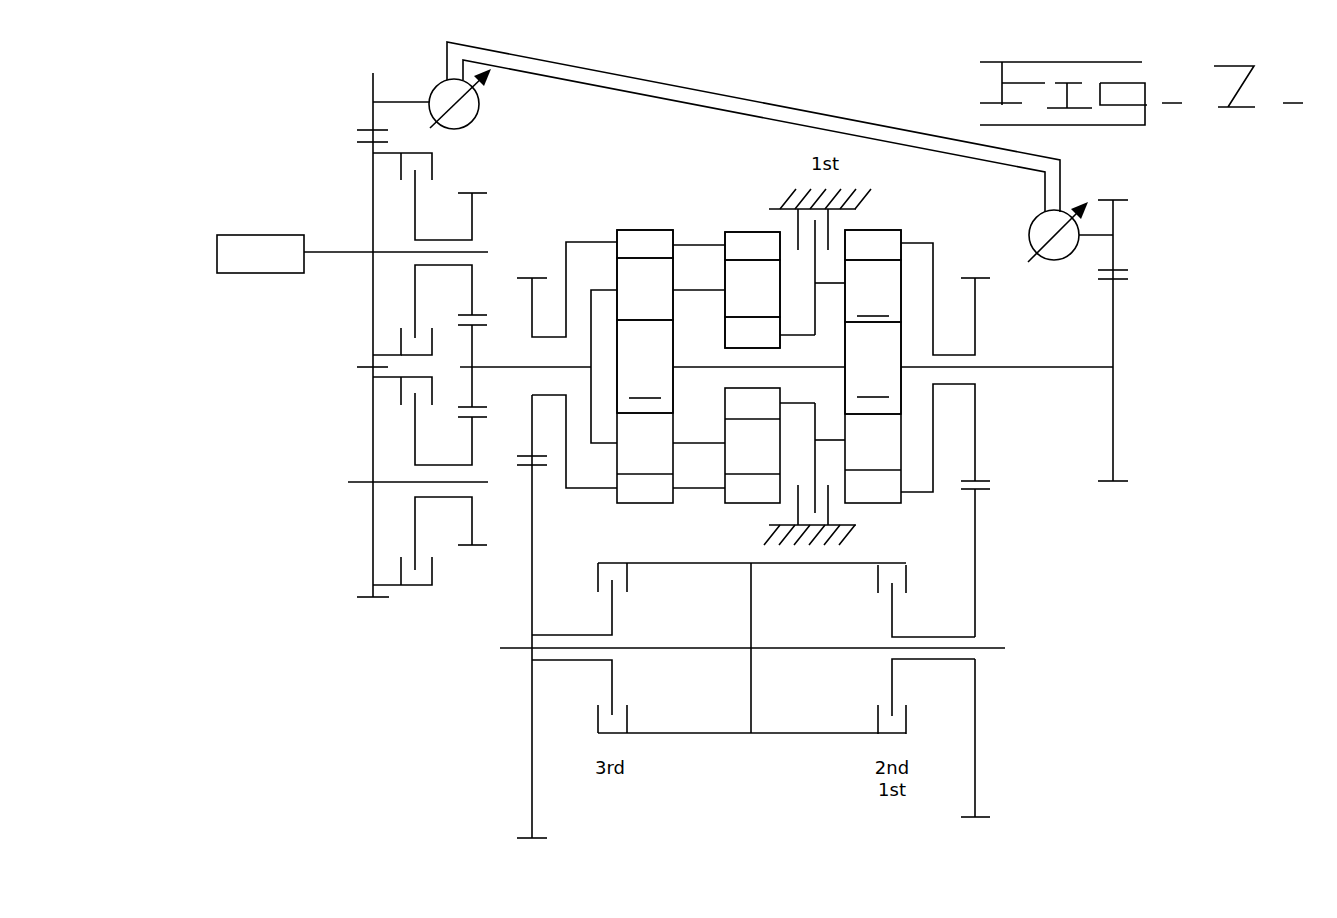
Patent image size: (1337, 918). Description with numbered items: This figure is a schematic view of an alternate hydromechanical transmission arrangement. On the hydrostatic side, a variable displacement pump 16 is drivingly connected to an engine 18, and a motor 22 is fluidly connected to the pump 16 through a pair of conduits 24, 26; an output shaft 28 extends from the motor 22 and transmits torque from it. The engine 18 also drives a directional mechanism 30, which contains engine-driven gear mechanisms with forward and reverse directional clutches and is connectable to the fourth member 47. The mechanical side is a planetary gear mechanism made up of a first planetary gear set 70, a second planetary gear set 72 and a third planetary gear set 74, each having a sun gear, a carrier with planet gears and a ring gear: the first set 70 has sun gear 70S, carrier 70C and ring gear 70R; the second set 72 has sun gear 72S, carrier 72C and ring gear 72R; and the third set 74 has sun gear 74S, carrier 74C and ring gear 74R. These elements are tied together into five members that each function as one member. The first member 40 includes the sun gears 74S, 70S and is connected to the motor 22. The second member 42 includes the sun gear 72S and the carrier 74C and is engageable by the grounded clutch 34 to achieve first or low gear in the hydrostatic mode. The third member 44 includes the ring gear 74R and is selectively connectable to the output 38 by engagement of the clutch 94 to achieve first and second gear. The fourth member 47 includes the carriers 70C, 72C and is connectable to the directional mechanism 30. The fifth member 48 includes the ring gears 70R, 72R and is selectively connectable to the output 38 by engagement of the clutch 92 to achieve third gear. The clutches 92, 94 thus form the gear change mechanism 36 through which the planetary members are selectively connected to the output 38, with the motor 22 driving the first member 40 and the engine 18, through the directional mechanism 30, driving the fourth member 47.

The variable displacement pump 16 is at (438, 82).
The engine 18 is at (272, 235).
The motor 22 is at (1038, 213).
The conduit 24 is at (678, 100).
The conduit 26 is at (780, 104).
The output shaft 28 is at (1090, 240).
The directional mechanism 30 is at (350, 392).
The grounded clutch 34 is at (828, 228).
The gear change mechanism 36 is at (756, 752).
The output 38 is at (996, 648).
The first member 40 is at (1064, 367).
The second member 42 is at (806, 337).
The third member 44 is at (935, 256).
The fourth member 47 is at (518, 366).
The fifth member 48 is at (592, 490).
The first planetary gear set 70 is at (628, 319).
The ring gear 70R is at (659, 230).
The carrier 70C is at (620, 285).
The sun gear 70S is at (645, 366).
The second planetary gear set 72 is at (728, 314).
The ring gear 72R is at (752, 232).
The sun gear 72S is at (734, 294).
The carrier 72C is at (730, 332).
The third planetary gear set 74 is at (912, 332).
The ring gear 74R is at (892, 238).
The carrier 74C is at (873, 291).
The sun gear 74S is at (873, 368).
The clutch 92 is at (598, 575).
The clutch 94 is at (908, 585).